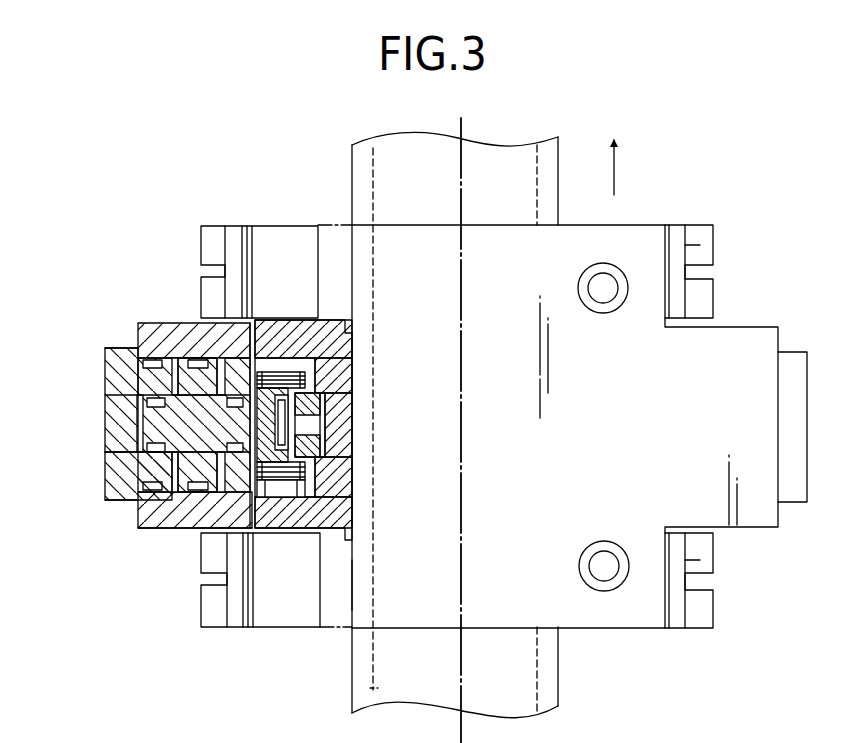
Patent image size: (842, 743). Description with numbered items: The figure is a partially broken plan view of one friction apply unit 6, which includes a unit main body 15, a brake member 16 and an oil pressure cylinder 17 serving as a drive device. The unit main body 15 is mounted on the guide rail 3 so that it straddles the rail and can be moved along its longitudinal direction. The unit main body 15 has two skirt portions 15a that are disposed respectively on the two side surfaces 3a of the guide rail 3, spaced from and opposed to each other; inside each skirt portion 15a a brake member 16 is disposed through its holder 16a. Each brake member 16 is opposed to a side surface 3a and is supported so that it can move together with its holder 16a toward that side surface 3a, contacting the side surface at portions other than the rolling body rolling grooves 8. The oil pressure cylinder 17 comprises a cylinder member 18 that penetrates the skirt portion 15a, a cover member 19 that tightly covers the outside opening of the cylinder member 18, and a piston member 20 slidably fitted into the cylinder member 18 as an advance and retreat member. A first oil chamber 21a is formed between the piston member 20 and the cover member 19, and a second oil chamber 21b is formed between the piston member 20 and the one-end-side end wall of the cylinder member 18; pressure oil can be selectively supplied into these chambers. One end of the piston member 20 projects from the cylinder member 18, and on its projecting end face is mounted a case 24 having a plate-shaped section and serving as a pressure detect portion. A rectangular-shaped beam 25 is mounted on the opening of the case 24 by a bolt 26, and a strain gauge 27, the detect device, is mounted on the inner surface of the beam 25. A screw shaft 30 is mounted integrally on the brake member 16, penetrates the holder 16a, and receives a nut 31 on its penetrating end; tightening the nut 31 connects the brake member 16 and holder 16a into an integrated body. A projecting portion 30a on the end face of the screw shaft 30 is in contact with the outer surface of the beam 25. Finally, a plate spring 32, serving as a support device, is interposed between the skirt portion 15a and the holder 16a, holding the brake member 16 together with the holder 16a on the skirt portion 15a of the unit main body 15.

The guide rail 3 is at (553, 689).
The side surface 3a is at (357, 585).
The friction apply unit 6 is at (656, 200).
The rolling body rolling groove 8 is at (365, 692).
The unit main body 15 is at (578, 245).
The skirt portion 15a is at (234, 226).
The brake member 16 is at (345, 420).
The holder 16a is at (290, 617).
The oil pressure cylinder 17 is at (162, 540).
The cylinder member 18 is at (150, 327).
The cover member 19 is at (105, 358).
The piston member 20 is at (148, 434).
The first oil chamber 21a is at (165, 384).
The second oil chamber 21b is at (200, 340).
The case 24 is at (262, 530).
The beam 25 is at (340, 477).
The bolt 26 is at (275, 372).
The strain gauge 27 is at (320, 372).
The screw shaft 30 is at (310, 430).
The projecting portion 30a is at (322, 405).
The nut 31 is at (322, 452).
The plate spring 32 is at (249, 246).